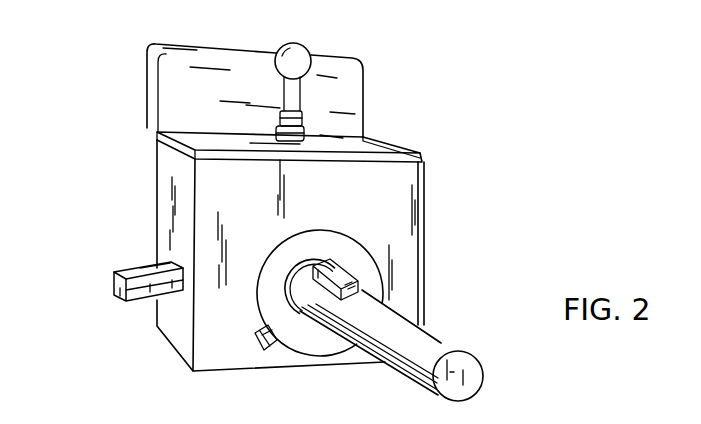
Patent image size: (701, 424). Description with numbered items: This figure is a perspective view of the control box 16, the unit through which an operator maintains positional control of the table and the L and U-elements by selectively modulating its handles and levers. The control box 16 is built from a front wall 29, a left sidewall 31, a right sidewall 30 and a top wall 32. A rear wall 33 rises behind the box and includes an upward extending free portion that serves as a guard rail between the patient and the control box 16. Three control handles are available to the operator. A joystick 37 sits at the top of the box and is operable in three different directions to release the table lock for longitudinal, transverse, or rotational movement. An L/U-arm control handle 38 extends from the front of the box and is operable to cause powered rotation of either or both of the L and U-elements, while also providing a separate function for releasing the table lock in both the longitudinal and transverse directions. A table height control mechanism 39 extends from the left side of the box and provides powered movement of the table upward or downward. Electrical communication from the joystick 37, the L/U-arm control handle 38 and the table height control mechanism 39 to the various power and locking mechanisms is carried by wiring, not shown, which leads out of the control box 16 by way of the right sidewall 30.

The control box 16 is at (425, 258).
The front wall 29 is at (382, 196).
The right sidewall 30 is at (445, 198).
The left sidewall 31 is at (168, 178).
The top wall 32 is at (380, 146).
The rear wall 33 is at (347, 97).
The joystick 37 is at (306, 48).
The L/U-arm control handle 38 is at (442, 342).
The table height control mechanism 39 is at (132, 272).